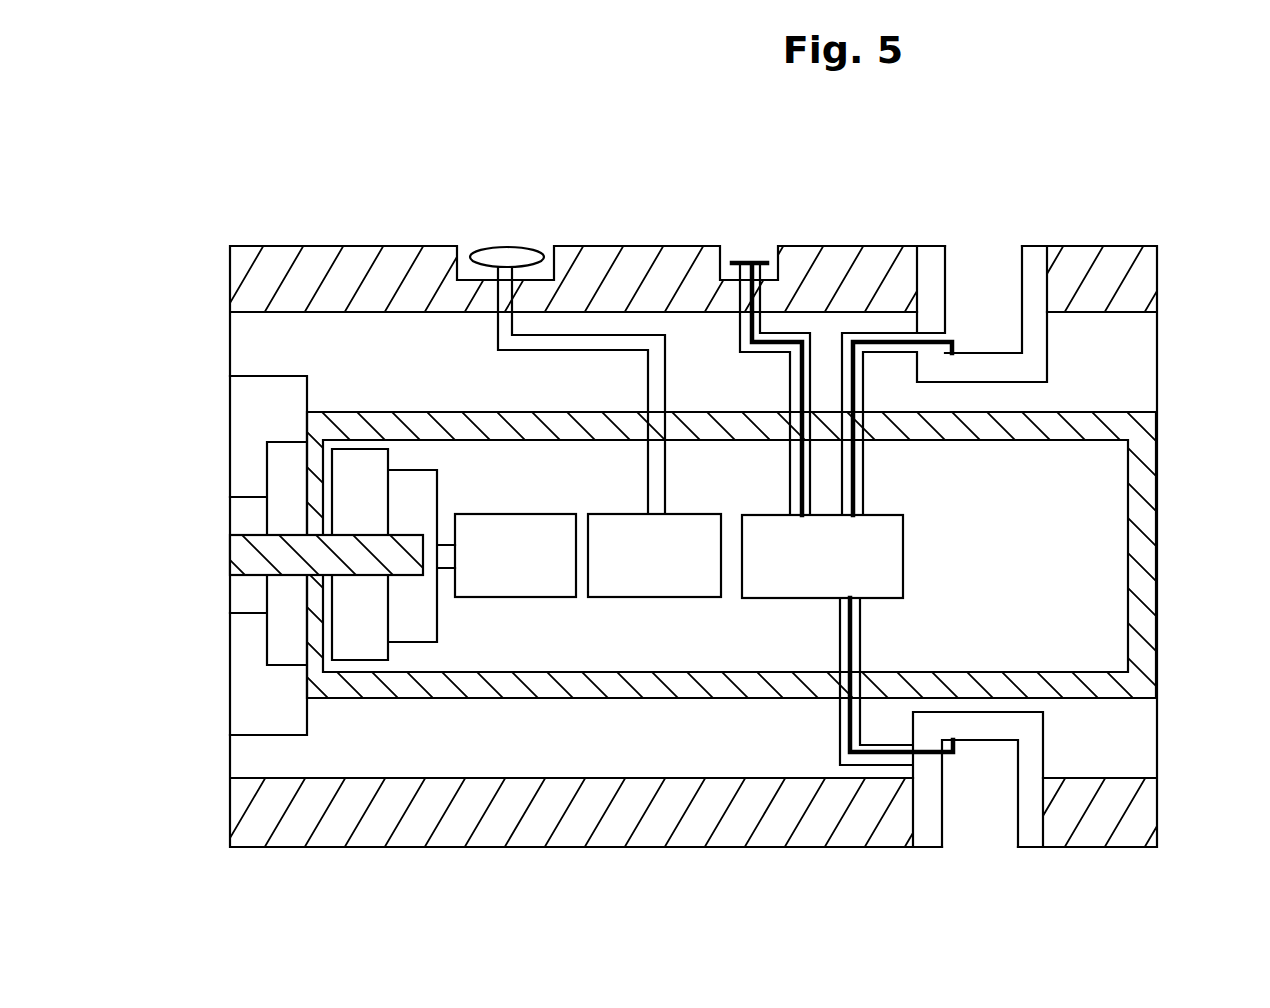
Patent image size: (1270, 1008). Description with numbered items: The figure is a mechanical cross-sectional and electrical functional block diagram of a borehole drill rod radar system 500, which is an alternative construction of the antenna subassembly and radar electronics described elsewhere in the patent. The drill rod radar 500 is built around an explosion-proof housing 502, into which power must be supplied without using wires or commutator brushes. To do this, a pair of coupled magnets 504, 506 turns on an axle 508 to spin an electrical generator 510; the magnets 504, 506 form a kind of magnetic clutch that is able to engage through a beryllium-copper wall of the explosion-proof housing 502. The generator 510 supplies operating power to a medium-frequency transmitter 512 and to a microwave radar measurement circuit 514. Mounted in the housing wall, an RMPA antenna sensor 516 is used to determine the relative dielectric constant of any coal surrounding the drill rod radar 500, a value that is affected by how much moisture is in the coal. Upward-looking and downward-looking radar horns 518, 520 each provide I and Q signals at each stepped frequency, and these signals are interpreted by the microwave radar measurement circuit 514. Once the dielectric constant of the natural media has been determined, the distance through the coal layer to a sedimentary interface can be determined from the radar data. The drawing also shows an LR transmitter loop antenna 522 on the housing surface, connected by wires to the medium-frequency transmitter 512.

The drill rod radar system 500 is at (992, 149).
The explosion-proof housing 502 is at (1143, 555).
The coupled magnet 504 is at (292, 442).
The coupled magnet 506 is at (376, 505).
The axle 508 is at (236, 563).
The electrical generator 510 is at (497, 513).
The medium-frequency transmitter 512 is at (636, 598).
The microwave radar measurement circuit 514 is at (904, 541).
The RMPA antenna sensor 516 is at (772, 260).
The upward-looking radar horn 518 is at (998, 295).
The downward-looking radar horn 520 is at (998, 800).
The LR transmitter loop antenna 522 is at (540, 249).